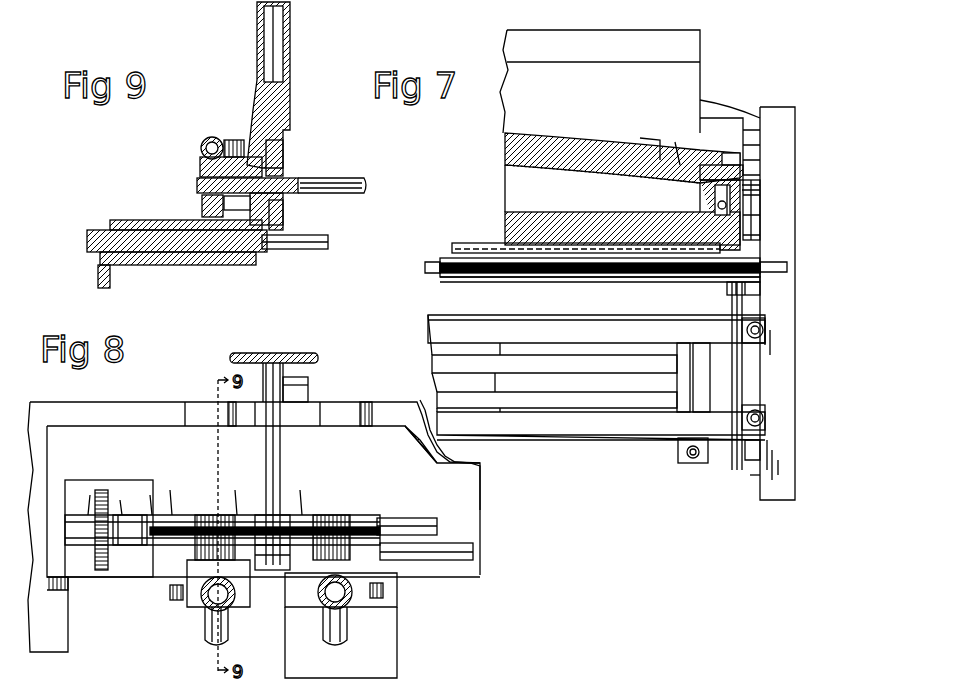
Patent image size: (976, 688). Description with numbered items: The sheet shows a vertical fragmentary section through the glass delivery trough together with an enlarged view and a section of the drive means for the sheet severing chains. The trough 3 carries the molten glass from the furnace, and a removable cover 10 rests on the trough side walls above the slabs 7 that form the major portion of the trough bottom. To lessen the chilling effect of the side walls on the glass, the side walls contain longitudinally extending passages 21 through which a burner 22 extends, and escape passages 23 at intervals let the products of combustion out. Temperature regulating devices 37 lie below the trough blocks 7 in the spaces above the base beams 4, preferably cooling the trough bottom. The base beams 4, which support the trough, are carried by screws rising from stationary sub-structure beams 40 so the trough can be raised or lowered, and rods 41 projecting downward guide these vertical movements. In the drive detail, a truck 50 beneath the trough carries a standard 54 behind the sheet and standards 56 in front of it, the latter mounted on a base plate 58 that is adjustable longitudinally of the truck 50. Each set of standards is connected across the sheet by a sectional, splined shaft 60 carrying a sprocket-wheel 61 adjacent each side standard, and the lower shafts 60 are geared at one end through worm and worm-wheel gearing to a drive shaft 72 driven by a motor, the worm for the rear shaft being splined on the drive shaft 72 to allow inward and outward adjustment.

In FIG. 7, the discharge spout or trough 3 is at (602, 188).
In FIG. 7, the base beams 4 is at (760, 303).
In FIG. 7, the slabs 7 is at (600, 225).
In FIG. 7, the removable cover 10 is at (560, 140).
In FIG. 7, the longitudinally extending passages 21 is at (725, 192).
In FIG. 7, the burner 22 is at (760, 228).
In FIG. 7, the escape passages 23 is at (730, 170).
In FIG. 7, the temperature regulating devices 37 is at (628, 277).
In FIG. 7, the stationary sub-structure beams 40 is at (762, 445).
In FIG. 7, the rods 41 is at (740, 388).
In FIG. 9, the truck 50 is at (202, 266).
In FIG. 8, the truck 50 is at (385, 400).
In FIG. 8, the standard 54 is at (355, 602).
In FIG. 9, the standards 56 is at (281, 119).
In FIG. 8, the standards 56 is at (192, 602).
In FIG. 9, the base plate 58 is at (128, 238).
In FIG. 9, the shaft 60 is at (281, 189).
In FIG. 8, the shaft 60 is at (206, 640).
In FIG. 8, the sprocket-wheel 61 is at (168, 594).
In FIG. 9, the drive shaft 72 is at (201, 149).
In FIG. 8, the drive shaft 72 is at (395, 520).